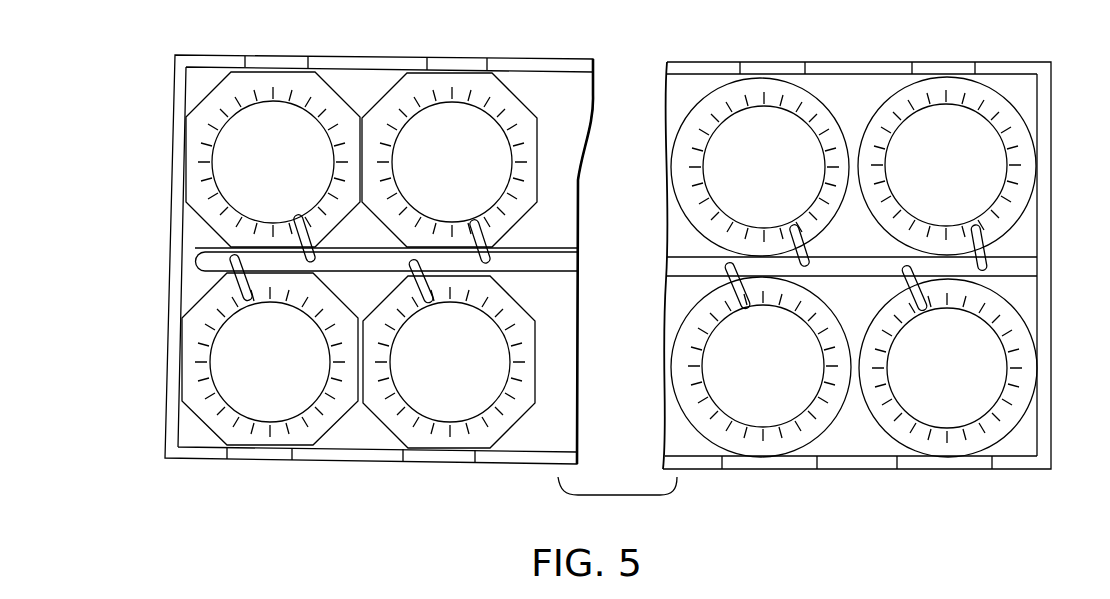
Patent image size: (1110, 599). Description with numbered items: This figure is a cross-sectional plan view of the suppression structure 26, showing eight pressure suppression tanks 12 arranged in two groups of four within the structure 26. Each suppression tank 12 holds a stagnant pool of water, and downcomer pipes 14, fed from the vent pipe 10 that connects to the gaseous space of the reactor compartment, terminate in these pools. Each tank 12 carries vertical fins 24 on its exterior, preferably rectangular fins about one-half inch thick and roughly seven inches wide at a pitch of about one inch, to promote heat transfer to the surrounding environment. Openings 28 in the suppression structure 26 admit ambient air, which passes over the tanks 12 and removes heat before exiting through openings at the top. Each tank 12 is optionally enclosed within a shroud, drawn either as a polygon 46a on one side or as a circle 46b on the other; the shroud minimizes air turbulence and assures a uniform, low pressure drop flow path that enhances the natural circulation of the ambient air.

The vent pipe 10 is at (836, 266).
The pressure suppression tank 12 is at (608, 264).
The downcomer pipe 14 is at (480, 248).
The vertical fin 24 is at (247, 420).
The suppression structure 26 is at (579, 60).
The opening 28 is at (478, 64).
The polygon shroud 46a is at (412, 74).
The circular shroud 46b is at (753, 79).